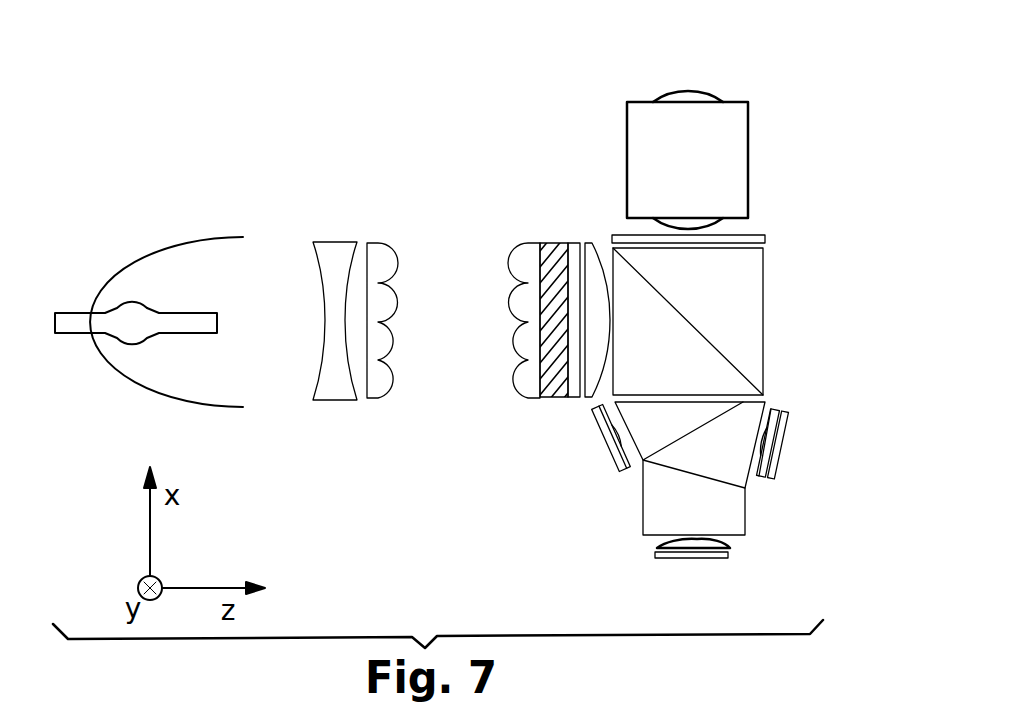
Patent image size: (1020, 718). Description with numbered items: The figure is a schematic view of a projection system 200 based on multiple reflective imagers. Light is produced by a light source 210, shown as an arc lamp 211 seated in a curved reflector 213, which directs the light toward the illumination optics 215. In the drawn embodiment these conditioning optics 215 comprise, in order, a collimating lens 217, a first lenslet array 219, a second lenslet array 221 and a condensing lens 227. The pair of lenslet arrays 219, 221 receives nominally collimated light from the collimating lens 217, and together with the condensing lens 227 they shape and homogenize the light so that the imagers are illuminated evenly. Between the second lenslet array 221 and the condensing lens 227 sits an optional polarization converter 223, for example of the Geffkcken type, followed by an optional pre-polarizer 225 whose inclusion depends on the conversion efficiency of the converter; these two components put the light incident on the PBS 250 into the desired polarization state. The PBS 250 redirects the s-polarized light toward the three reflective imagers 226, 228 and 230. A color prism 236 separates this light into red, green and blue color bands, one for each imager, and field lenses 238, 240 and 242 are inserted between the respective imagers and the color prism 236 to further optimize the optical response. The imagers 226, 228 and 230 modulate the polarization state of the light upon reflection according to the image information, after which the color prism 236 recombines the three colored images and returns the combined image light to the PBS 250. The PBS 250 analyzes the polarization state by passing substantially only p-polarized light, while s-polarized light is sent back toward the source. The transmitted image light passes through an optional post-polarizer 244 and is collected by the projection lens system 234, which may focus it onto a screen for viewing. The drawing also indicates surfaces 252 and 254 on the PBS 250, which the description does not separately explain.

The projection system 200 is at (800, 101).
The light source 210 is at (182, 257).
The arc lamp 211 is at (125, 305).
The curved reflector 213 is at (140, 385).
The illumination optics 215 is at (352, 228).
The collimating lens 217 is at (333, 247).
The first lenslet array 219 is at (392, 267).
The second lenslet array 221 is at (520, 267).
The polarization converter 223 is at (553, 240).
The pre-polarizer 225 is at (572, 400).
The condensing lens 227 is at (595, 247).
The projection lens system 234 is at (737, 187).
The post-polarizer 244 is at (753, 235).
The prism surface 254 is at (763, 273).
The PBS 250 is at (763, 368).
The dichroic coating 252 is at (720, 352).
The field lens 242 is at (772, 408).
The reflective imager 230 is at (775, 467).
The reflective imager 226 is at (610, 452).
The field lens 238 is at (640, 473).
The color prism 236 is at (654, 516).
The reflective imager 228 is at (675, 558).
The field lens 240 is at (732, 543).